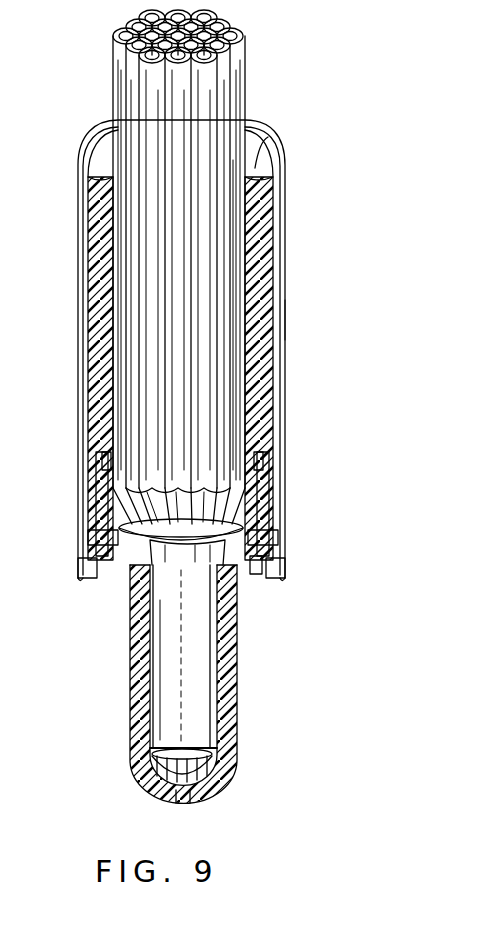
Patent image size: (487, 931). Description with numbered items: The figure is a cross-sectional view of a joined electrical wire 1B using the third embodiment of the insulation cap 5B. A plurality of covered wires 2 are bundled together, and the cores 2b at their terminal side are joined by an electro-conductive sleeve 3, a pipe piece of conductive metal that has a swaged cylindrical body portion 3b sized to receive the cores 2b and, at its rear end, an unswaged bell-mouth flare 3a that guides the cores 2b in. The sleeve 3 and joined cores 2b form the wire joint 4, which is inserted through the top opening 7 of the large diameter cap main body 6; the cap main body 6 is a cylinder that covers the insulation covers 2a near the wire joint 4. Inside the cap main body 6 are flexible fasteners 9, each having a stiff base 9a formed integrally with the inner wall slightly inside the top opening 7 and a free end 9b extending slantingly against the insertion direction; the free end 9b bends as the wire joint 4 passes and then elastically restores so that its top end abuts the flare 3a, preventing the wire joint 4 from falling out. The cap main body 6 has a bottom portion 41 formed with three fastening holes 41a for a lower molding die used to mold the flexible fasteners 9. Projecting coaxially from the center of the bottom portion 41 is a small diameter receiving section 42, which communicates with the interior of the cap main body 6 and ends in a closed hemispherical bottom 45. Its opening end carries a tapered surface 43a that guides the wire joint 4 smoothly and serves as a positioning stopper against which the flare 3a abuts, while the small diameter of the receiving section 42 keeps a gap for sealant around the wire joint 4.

The joined electrical wire 1B is at (318, 330).
The covered wires 2 is at (250, 80).
The insulation covers 2a is at (238, 238).
The cores 2b is at (197, 767).
The electro-conductive sleeve 3 is at (203, 682).
The flare 3a is at (98, 577).
The body portion 3b is at (163, 722).
The wire joint 4 is at (303, 672).
The insulation cap 5B is at (290, 282).
The cap main body 6 is at (98, 246).
The top opening 7 is at (262, 158).
The flexible fastener 9 is at (105, 490).
The base 9a is at (97, 457).
The free end 9b is at (105, 535).
The bottom portion 41 is at (283, 570).
The fastening holes 41a is at (252, 567).
The receiving section 42 is at (137, 747).
The tapered surface 43a is at (128, 598).
The hemispherical bottom 45 is at (173, 800).